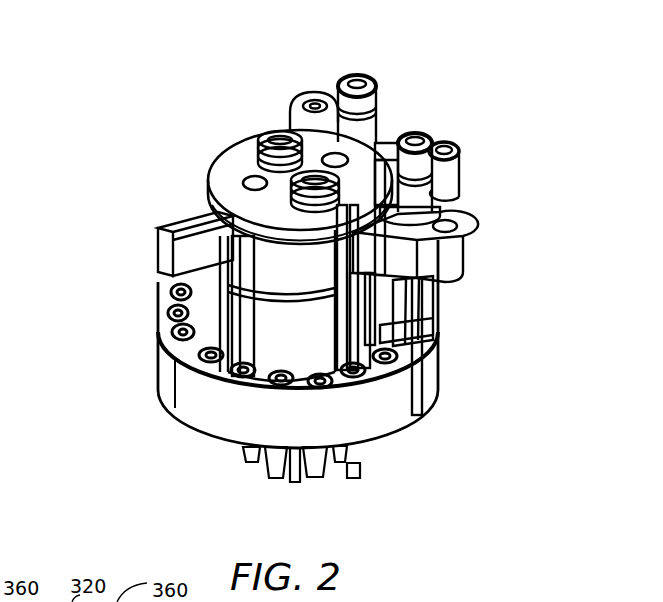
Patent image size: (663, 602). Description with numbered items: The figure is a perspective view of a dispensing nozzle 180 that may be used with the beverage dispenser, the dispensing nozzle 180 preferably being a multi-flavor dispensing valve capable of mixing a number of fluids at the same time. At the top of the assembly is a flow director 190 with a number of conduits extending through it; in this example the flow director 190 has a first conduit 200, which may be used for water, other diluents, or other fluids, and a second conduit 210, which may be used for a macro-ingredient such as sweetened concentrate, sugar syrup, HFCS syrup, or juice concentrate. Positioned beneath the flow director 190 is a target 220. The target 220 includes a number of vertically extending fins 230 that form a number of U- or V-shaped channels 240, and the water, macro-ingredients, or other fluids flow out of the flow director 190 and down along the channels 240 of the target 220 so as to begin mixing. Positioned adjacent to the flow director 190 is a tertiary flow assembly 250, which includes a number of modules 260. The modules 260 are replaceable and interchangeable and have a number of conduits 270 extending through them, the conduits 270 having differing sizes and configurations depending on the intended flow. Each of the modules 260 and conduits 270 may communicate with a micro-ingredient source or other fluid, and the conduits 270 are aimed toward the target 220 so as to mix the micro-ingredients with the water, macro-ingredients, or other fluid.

The dispensing nozzle 180 is at (116, 100).
The flow director 190 is at (382, 147).
The first conduit 200 is at (258, 133).
The second conduit 210 is at (290, 191).
The target 220 is at (357, 470).
The vertically extending fins 230 is at (243, 450).
The channels 240 is at (242, 465).
The tertiary flow assembly 250 is at (448, 360).
The modules 260 is at (440, 318).
The conduits 270 is at (418, 133).